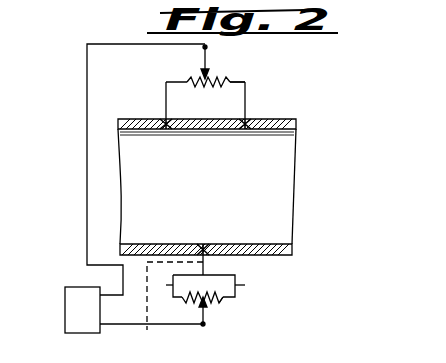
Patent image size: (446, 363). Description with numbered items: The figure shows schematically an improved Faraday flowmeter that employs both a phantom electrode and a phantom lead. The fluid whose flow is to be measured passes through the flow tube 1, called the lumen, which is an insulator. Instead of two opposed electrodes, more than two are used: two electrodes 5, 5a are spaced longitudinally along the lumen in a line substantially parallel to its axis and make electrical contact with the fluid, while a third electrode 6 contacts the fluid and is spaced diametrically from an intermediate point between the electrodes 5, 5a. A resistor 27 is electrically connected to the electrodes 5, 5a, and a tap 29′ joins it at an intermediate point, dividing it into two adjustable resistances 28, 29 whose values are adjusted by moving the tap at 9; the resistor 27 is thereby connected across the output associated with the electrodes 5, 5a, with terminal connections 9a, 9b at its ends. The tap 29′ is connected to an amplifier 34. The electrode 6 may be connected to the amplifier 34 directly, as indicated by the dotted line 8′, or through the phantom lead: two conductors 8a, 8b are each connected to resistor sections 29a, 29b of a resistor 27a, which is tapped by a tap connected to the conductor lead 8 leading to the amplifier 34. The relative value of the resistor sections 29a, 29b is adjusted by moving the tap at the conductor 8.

The flow tube 1 is at (290, 183).
The electrode 5 is at (166, 130).
The electrode 5a is at (247, 130).
The electrode 6 is at (205, 243).
The conductor 8 is at (244, 318).
The dotted line 8′ is at (141, 312).
The conductor 8a is at (235, 288).
The conductor 8b is at (174, 291).
The tap 9 is at (196, 82).
The potentiometer terminal 9a is at (166, 98).
The potentiometer terminal 9b is at (245, 103).
The resistor 27 is at (183, 81).
The resistor 27a is at (229, 303).
The adjustable resistance 28 is at (187, 88).
The adjustable resistance 29 is at (230, 80).
The tap 29′ is at (205, 61).
The resistor section 29a is at (190, 296).
The resistor section 29b is at (221, 303).
The amplifier 34 is at (65, 315).